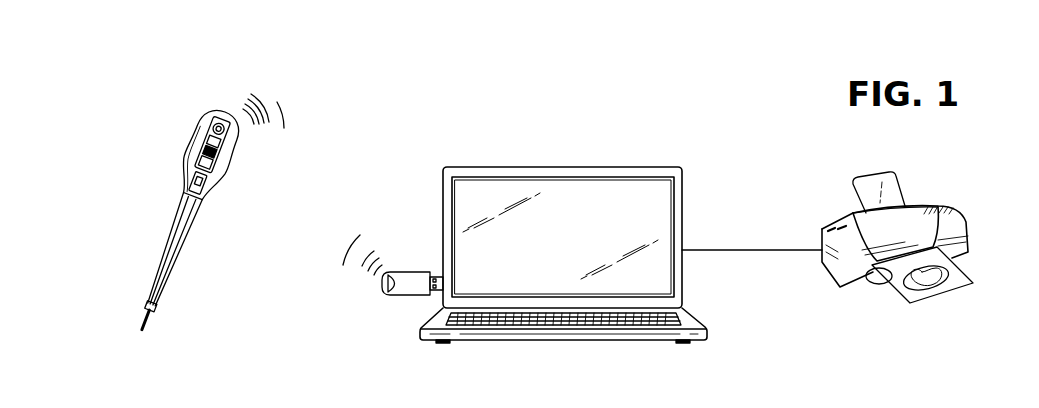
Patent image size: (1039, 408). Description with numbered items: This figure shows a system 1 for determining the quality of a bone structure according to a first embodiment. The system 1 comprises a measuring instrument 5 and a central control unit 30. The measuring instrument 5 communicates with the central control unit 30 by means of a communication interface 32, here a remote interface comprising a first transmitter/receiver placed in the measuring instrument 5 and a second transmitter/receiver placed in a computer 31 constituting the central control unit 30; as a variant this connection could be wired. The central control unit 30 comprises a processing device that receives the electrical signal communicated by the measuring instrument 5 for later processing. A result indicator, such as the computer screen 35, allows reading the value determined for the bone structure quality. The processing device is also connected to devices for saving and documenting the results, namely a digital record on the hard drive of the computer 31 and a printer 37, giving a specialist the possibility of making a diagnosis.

The system 1 is at (695, 78).
The measuring instrument 5 is at (213, 108).
The central control unit 30 is at (713, 137).
The computer 31 is at (553, 167).
The communication interface 32 is at (357, 229).
The computer screen 35 is at (636, 218).
The printer 37 is at (950, 222).